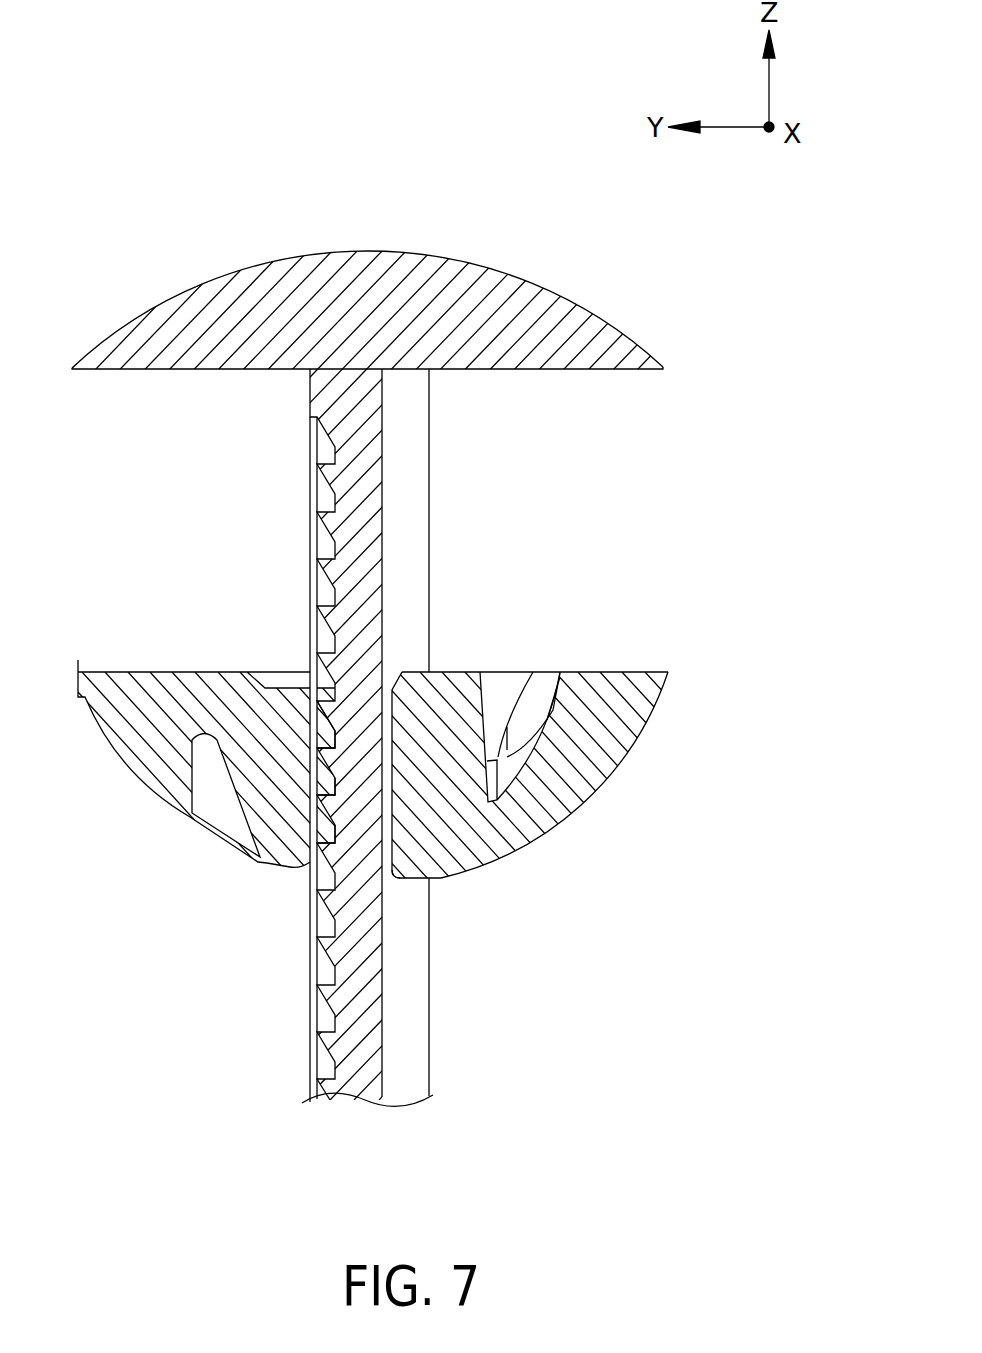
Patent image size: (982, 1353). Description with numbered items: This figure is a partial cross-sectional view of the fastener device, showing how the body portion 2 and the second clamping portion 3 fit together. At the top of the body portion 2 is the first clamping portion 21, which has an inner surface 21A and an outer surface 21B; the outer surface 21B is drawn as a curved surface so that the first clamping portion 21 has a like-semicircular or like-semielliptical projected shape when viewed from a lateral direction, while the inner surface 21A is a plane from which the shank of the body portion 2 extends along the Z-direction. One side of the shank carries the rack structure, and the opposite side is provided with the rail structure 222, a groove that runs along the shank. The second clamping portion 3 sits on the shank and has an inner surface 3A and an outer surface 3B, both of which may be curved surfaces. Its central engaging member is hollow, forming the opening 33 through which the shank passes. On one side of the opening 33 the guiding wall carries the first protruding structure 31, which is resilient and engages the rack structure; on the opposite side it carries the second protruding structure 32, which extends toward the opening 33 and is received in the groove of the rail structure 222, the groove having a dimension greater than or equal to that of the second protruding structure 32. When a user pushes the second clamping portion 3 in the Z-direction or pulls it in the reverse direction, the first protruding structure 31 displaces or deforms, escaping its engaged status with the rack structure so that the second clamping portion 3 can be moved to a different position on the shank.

The body portion 2 is at (404, 644).
The first clamping portion 21 is at (404, 286).
The inner surface 21A is at (623, 370).
The outer surface 21B is at (467, 262).
The rail structure 222 is at (402, 1033).
The second clamping portion 3 is at (366, 794).
The inner surface 3A is at (583, 688).
The outer surface 3B is at (573, 813).
The first protruding structure 31 is at (330, 823).
The second protruding structure 32 is at (438, 777).
The opening 33 is at (387, 872).